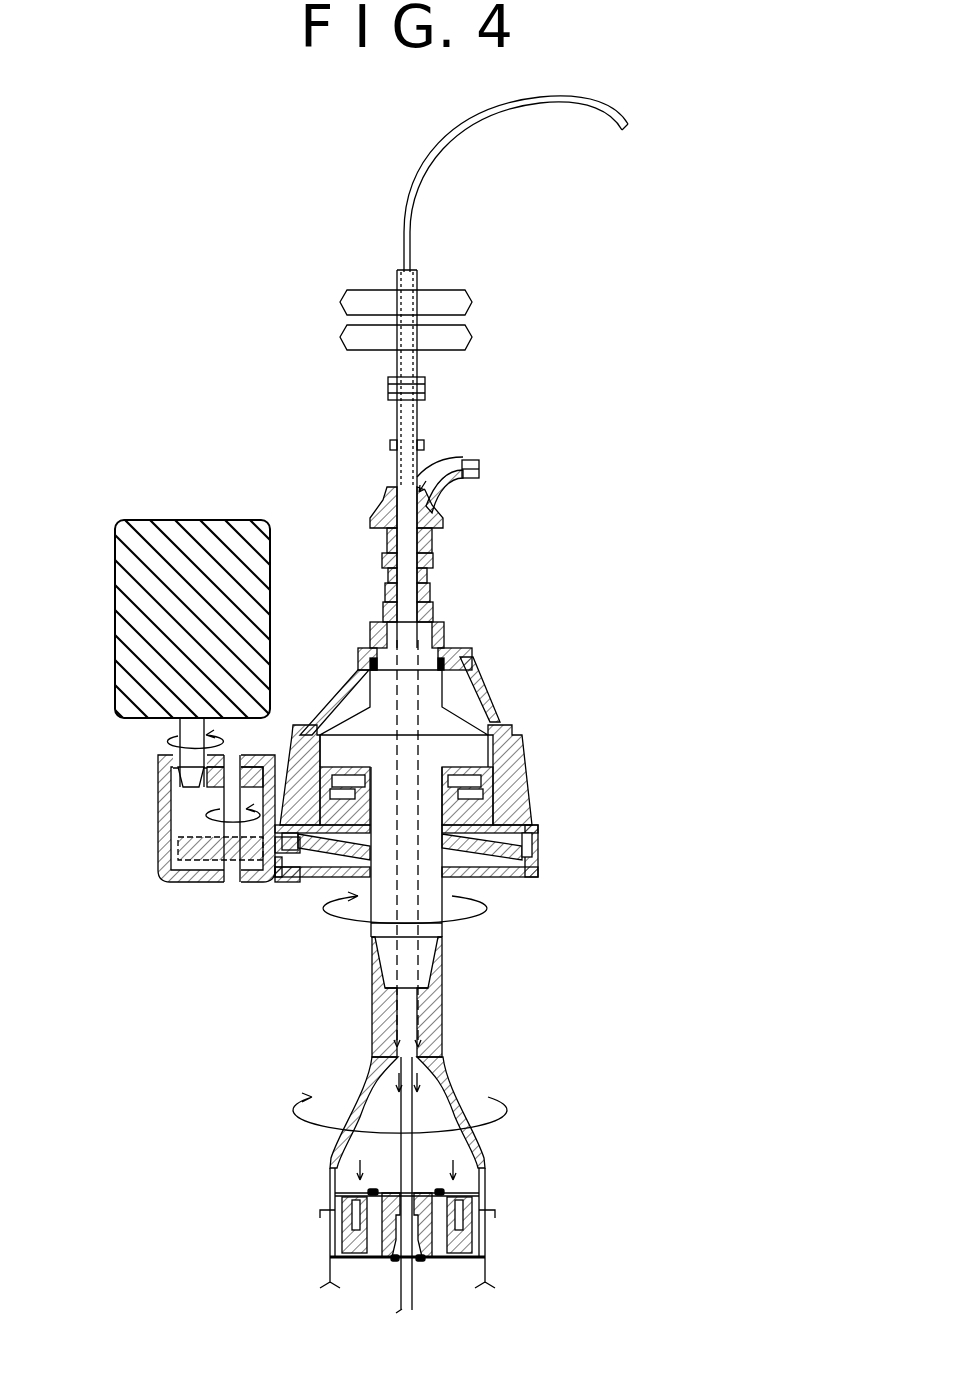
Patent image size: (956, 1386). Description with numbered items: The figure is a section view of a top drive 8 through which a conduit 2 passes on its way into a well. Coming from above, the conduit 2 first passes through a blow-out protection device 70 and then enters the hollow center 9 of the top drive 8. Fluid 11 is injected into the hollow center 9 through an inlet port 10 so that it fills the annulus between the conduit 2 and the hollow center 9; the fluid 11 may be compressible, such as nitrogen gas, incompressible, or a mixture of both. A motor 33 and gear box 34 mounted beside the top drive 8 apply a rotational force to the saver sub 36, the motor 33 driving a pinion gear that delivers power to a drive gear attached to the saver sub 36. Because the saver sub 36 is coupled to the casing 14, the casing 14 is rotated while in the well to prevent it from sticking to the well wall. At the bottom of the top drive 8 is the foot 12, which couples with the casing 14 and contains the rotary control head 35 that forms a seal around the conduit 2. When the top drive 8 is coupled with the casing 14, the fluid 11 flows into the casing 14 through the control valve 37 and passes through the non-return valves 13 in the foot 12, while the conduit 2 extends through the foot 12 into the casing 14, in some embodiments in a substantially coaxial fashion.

The conduit 2 is at (609, 114).
The blow-out protection device 70 is at (500, 323).
The inlet port 10 is at (501, 466).
The fluid 11 is at (490, 486).
The top drive 8 is at (354, 578).
The hollow center 9 is at (435, 693).
The motor 33 is at (136, 506).
The gear box 34 is at (138, 818).
The saver sub 36 is at (452, 1028).
The rotary control head 35 is at (387, 1191).
The control valve 37 is at (487, 1200).
The foot 12 is at (312, 1247).
The non-return valves 13 is at (470, 1230).
The casing 14 is at (487, 1265).